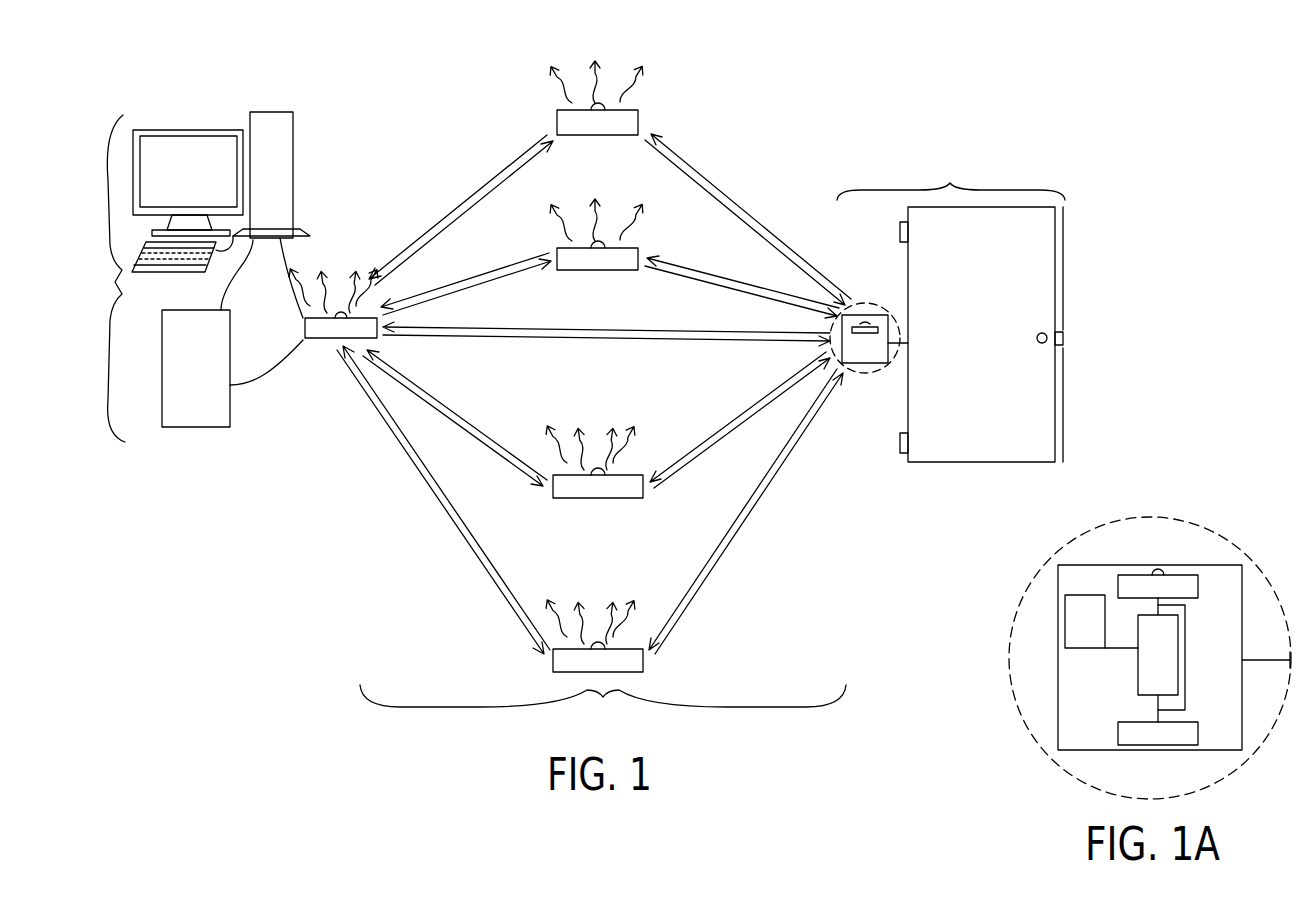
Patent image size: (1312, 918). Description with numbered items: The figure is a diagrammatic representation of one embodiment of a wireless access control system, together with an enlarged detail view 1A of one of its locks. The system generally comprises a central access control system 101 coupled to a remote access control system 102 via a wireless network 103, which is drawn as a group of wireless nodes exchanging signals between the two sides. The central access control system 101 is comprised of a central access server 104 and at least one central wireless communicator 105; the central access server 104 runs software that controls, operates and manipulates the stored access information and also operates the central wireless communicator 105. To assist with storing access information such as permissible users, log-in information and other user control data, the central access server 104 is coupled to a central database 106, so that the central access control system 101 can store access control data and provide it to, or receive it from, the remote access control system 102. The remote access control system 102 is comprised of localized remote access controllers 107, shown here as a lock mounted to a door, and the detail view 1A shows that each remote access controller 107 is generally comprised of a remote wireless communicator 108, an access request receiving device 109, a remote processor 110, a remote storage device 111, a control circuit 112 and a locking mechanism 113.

In FIG. 1, the central access control system 101 is at (191, 278).
In FIG. 1, the remote access control system 102 is at (951, 309).
In FIG. 1, the wireless network 103 is at (594, 399).
In FIG. 1, the central access server 104 is at (293, 152).
In FIG. 1, the central wireless communicator 105 is at (313, 338).
In FIG. 1, the central database 106 is at (185, 427).
In FIG. 1, the remote access controller 107 is at (870, 315).
In FIG. 1A, the remote wireless communicator 108 is at (1198, 582).
In FIG. 1A, the access request receiving device 109 is at (1135, 745).
In FIG. 1A, the remote processor 110 is at (1138, 672).
In FIG. 1A, the remote storage device 111 is at (1087, 648).
In FIG. 1A, the control circuit 112 is at (1185, 640).
In FIG. 1, the locking mechanism 113 is at (1085, 325).
In FIG. 1, the detail view callout 1A is at (870, 374).